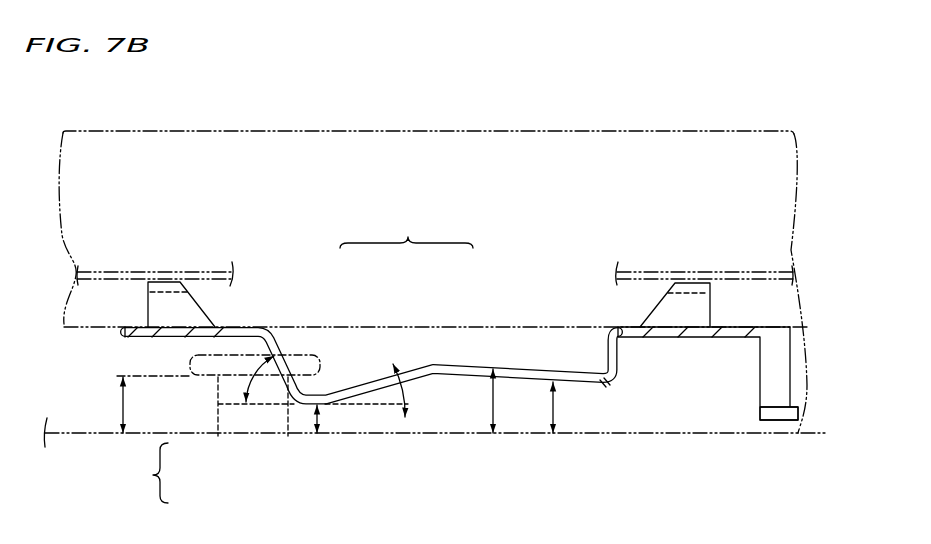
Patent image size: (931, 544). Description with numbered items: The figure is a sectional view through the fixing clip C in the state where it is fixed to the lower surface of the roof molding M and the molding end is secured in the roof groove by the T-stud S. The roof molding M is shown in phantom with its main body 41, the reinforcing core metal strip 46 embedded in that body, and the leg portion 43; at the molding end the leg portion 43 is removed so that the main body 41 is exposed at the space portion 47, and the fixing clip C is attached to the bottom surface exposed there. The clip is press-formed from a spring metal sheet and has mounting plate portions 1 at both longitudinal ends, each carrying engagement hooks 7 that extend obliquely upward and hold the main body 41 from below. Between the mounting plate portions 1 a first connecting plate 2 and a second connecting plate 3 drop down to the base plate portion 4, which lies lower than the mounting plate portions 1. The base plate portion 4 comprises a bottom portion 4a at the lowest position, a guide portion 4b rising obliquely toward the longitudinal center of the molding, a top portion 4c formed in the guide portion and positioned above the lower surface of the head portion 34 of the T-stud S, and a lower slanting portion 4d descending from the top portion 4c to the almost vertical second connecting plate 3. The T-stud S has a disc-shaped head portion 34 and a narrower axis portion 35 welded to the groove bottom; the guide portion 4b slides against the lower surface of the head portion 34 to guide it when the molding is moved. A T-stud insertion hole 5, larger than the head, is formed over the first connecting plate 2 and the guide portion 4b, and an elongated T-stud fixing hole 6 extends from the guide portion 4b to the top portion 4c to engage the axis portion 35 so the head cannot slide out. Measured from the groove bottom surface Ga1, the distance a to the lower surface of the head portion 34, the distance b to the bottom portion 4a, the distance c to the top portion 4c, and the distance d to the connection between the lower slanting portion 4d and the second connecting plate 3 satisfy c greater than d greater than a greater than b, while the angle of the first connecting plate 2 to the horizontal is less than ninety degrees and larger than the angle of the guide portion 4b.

The roof molding M is at (617, 131).
The mounting plate portion 1 is at (138, 337).
The first connecting plate 2 is at (271, 334).
The second connecting plate 3 is at (618, 355).
The base plate portion 4 is at (406, 232).
The bottom portion 4a is at (327, 392).
The guide portion 4b is at (409, 376).
The top portion 4c is at (434, 363).
The lower slanting portion 4d is at (520, 367).
The T-stud insertion hole 5 is at (310, 405).
The T-stud fixing hole 6 is at (511, 378).
The engagement hook 7 is at (158, 307).
The head portion 34 is at (193, 377).
The axis portion 35 is at (217, 405).
The main body 41 is at (82, 333).
The leg portion 43 is at (760, 395).
The reinforcing core metal strip 46 is at (193, 270).
The space portion 47 is at (530, 345).
The fixing clip C is at (562, 348).
The T-stud S is at (151, 473).
The bottom surface of the roof groove Ga1 is at (642, 433).
The distance to lower surface of head portion a is at (114, 405).
The distance to upper surface of bottom portion b is at (325, 412).
The distance to upper surface of top portion c is at (485, 401).
The distance to connection portion upper surface d is at (562, 407).